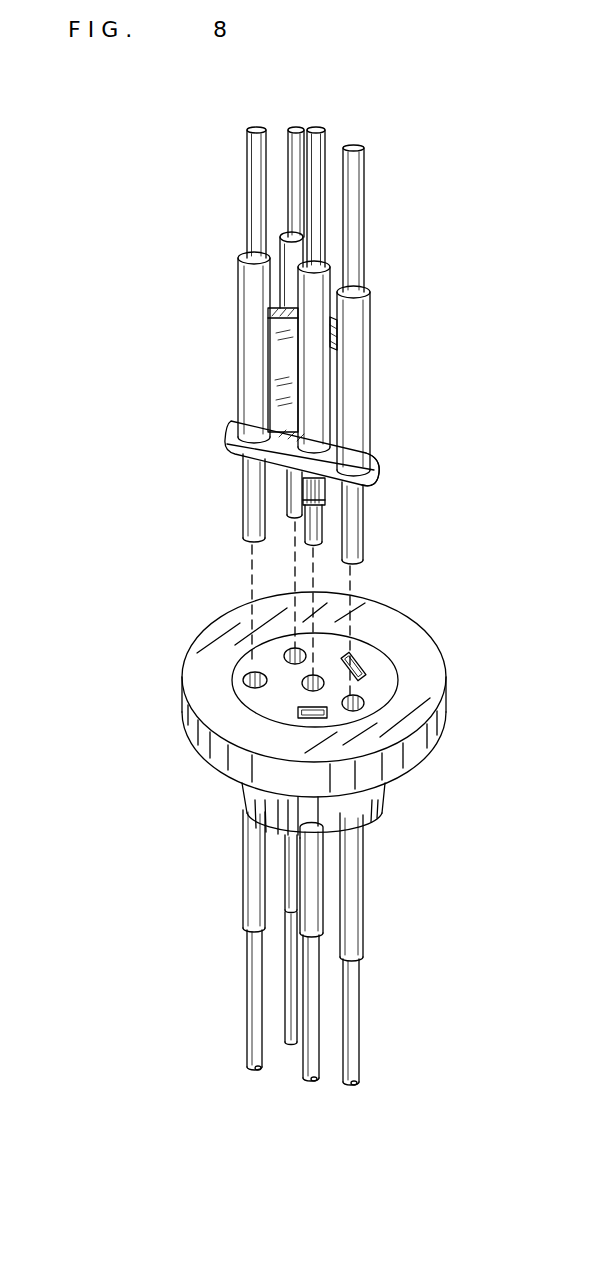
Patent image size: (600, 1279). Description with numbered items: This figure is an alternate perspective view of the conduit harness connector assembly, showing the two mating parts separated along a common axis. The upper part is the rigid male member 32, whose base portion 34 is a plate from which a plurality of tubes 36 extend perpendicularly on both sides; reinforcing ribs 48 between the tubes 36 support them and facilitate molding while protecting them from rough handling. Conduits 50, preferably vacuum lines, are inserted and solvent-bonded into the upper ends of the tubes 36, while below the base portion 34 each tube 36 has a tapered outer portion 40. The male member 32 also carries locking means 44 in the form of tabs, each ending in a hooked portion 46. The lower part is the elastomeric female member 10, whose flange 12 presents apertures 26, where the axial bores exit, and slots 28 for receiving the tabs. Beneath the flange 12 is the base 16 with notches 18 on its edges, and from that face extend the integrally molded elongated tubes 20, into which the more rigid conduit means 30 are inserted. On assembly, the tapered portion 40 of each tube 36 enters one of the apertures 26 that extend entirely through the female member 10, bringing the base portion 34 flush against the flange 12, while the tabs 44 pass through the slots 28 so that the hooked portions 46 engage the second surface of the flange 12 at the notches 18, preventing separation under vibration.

The female member 10 is at (180, 845).
The flange 12 is at (301, 788).
The base 16 is at (318, 826).
The notches 18 is at (322, 820).
The elongated tubes 20 is at (287, 860).
The apertures 26 is at (352, 698).
The slots 28 is at (360, 660).
The conduit means 30 is at (288, 1044).
The male member 32 is at (222, 423).
The base portion 34 is at (372, 480).
The tubes 36 is at (245, 325).
The tapered outer portion 40 is at (244, 498).
The locking means 44 is at (322, 508).
The hooked portion 46 is at (322, 510).
The reinforcing ribs 48 is at (302, 370).
The conduits 50 is at (257, 128).